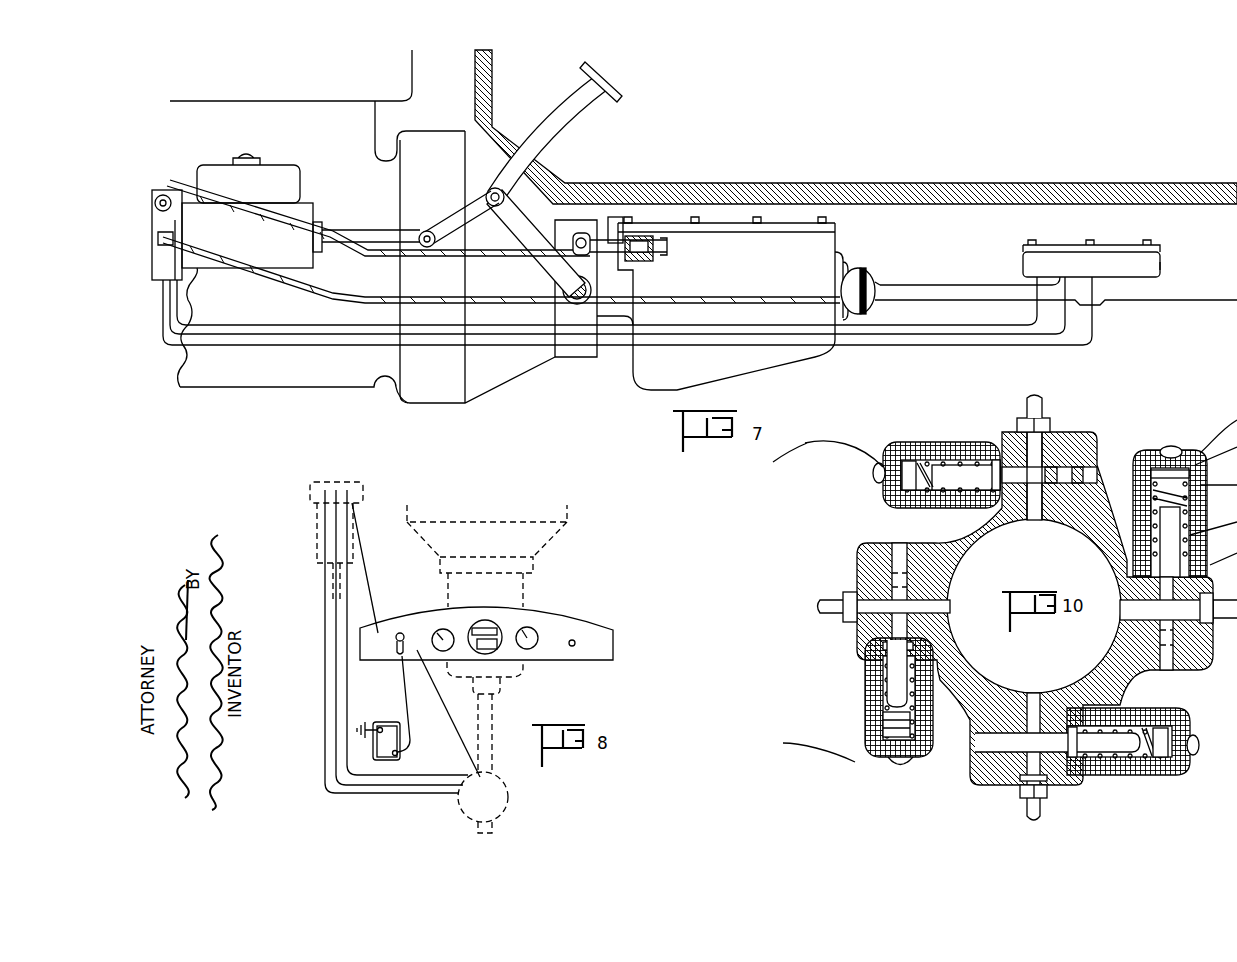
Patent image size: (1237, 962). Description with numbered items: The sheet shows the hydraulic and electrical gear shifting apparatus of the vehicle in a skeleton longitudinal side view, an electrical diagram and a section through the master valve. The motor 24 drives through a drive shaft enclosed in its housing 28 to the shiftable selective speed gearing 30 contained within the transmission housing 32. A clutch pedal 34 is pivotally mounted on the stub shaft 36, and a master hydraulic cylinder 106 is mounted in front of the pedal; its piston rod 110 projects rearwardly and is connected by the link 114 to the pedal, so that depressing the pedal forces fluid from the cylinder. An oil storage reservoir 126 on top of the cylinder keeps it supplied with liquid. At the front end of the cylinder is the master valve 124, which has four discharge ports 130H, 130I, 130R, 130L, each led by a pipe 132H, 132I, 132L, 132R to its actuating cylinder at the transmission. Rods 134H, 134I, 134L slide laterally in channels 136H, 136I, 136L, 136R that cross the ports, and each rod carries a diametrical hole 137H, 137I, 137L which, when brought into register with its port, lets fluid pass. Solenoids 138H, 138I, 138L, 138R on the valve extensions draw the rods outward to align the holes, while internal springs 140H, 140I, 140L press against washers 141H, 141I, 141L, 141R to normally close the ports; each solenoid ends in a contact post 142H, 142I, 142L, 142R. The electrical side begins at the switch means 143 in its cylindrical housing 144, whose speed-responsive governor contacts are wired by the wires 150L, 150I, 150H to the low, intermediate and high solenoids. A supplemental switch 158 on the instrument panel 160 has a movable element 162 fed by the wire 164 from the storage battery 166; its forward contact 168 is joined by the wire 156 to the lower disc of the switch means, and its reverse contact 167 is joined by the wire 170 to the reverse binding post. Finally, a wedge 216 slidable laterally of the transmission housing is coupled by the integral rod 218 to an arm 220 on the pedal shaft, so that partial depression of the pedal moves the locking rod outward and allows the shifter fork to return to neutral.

In FIG. 7, the motor 24 is at (317, 105).
In FIG. 7, the drive shaft housing 28 is at (1232, 292).
In FIG. 7, the shiftable selective speed gearing 30 is at (716, 303).
In FIG. 7, the transmission housing 32 is at (822, 250).
In FIG. 7, the clutch pedal 34 is at (567, 105).
In FIG. 7, the stub shaft 36 is at (575, 305).
In FIG. 7, the master hydraulic cylinder 106 is at (252, 235).
In FIG. 8, the master hydraulic cylinder 106 is at (320, 530).
In FIG. 7, the piston rod 110 is at (352, 230).
In FIG. 7, the link 114 is at (452, 222).
In FIG. 7, the master valve 124 is at (152, 208).
In FIG. 8, the master valve 124 is at (310, 490).
In FIG. 10, the master valve 124 is at (1035, 608).
In FIG. 7, the oil storage reservoir 126 is at (280, 180).
In FIG. 7, the pipe 132I is at (497, 260).
In FIG. 10, the pipe 132I is at (1033, 408).
In FIG. 7, the pipe 132H is at (497, 298).
In FIG. 10, the pipe 132H is at (830, 603).
In FIG. 7, the switch means 143 is at (1110, 262).
In FIG. 8, the switch means 143 is at (483, 802).
In FIG. 7, the cylindrical housing 144 is at (1160, 265).
In FIG. 8, the cylindrical housing 144 is at (510, 790).
In FIG. 7, the wire 150H is at (222, 325).
In FIG. 8, the wire 150H is at (347, 720).
In FIG. 10, the wire 150H is at (797, 740).
In FIG. 7, the wire 150I is at (293, 334).
In FIG. 8, the wire 150I is at (358, 783).
In FIG. 10, the wire 150I is at (818, 461).
In FIG. 7, the wire 150L is at (352, 345).
In FIG. 8, the wire 150L is at (405, 793).
In FIG. 8, the wire 156 is at (452, 723).
In FIG. 8, the supplemental switch 158 is at (403, 633).
In FIG. 8, the instrument panel 160 is at (578, 625).
In FIG. 8, the movable element 162 is at (398, 654).
In FIG. 8, the wire 164 is at (407, 703).
In FIG. 8, the storage battery 166 is at (400, 755).
In FIG. 8, the reverse contact 167 is at (377, 633).
In FIG. 8, the forward contact 168 is at (423, 633).
In FIG. 8, the wire 170 is at (370, 575).
In FIG. 7, the wedge 216 is at (655, 256).
In FIG. 7, the integral rod 218 is at (605, 238).
In FIG. 7, the arm 220 is at (580, 233).
In FIG. 10, the discharge port 130I is at (1033, 457).
In FIG. 10, the discharge port 130H is at (883, 610).
In FIG. 10, the discharge port 130L is at (1035, 762).
In FIG. 10, the discharge port 130R is at (1166, 610).
In FIG. 10, the pipe 132L is at (1035, 808).
In FIG. 10, the pipe 132R is at (1218, 608).
In FIG. 10, the rod 134I is at (890, 440).
In FIG. 10, the rod 134H is at (903, 677).
In FIG. 10, the rod 134L is at (1130, 763).
In FIG. 10, the channel 136I is at (1090, 483).
In FIG. 10, the channel 136H is at (898, 545).
In FIG. 10, the channel 136L is at (972, 742).
In FIG. 10, the channel 136R is at (1168, 670).
In FIG. 10, the hole 137I is at (1097, 477).
In FIG. 10, the hole 137H is at (860, 557).
In FIG. 10, the hole 137L is at (975, 755).
In FIG. 10, the solenoid 138I is at (925, 442).
In FIG. 10, the solenoid 138H is at (868, 693).
In FIG. 10, the solenoid 138L is at (1187, 775).
In FIG. 10, the solenoid 138R is at (1185, 498).
In FIG. 10, the spring 140I is at (900, 487).
In FIG. 10, the spring 140H is at (900, 720).
In FIG. 10, the spring 140L is at (1200, 752).
In FIG. 10, the washer 141I is at (998, 458).
In FIG. 10, the washer 141H is at (887, 647).
In FIG. 10, the washer 141L is at (1087, 775).
In FIG. 10, the contact post 142I is at (873, 473).
In FIG. 10, the contact post 142H is at (890, 762).
In FIG. 10, the contact post 142L is at (1200, 743).
In FIG. 10, the contact post 142R is at (1169, 458).